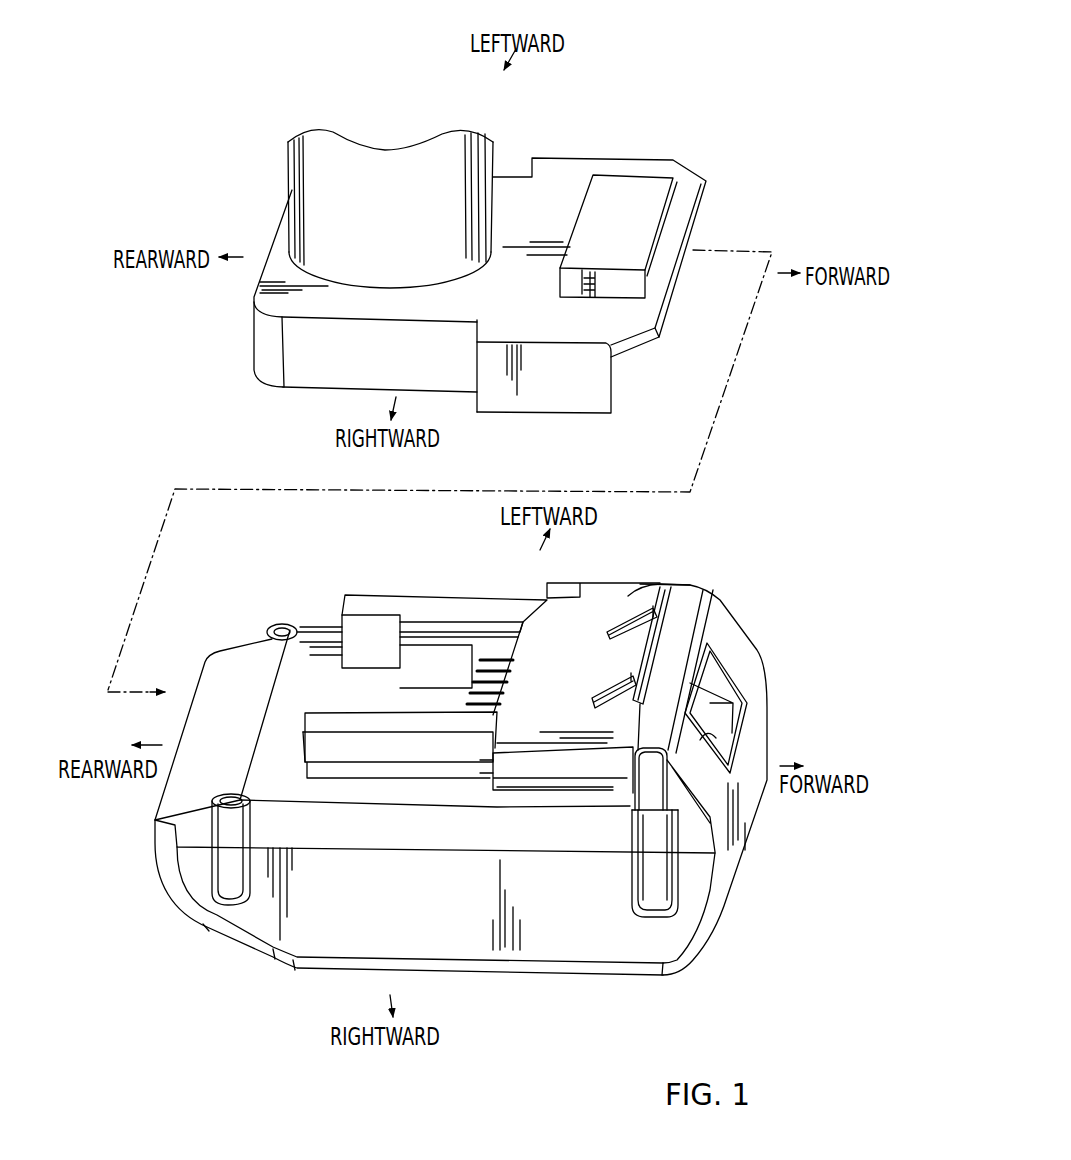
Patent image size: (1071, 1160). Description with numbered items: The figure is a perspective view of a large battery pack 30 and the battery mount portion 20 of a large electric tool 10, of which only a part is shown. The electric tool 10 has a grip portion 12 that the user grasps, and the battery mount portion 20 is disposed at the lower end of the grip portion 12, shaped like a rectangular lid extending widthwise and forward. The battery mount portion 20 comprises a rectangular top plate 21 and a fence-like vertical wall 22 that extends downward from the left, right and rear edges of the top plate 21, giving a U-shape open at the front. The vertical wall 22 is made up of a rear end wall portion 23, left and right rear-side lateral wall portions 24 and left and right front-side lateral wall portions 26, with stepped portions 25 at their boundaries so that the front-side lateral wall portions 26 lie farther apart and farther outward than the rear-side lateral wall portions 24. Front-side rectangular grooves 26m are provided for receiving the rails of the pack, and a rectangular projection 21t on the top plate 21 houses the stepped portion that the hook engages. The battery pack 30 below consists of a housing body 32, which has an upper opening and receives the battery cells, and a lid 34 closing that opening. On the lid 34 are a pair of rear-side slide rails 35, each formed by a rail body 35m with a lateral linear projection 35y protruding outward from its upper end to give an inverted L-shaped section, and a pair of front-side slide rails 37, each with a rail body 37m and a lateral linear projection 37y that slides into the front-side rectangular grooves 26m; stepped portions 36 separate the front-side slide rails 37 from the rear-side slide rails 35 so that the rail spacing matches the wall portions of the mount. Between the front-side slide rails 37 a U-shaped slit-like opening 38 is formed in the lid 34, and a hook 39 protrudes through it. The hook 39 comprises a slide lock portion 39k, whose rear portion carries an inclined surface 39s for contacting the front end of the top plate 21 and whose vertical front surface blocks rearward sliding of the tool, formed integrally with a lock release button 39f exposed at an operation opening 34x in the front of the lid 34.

The electric tool 10 is at (423, 68).
The grip portion 12 is at (372, 185).
The battery mount portion 20 is at (618, 162).
The top plate 21 is at (550, 228).
The rectangular projection 21t is at (622, 223).
The vertical wall 22 is at (256, 386).
The rear end wall portion 23 is at (254, 334).
The rear-side lateral wall portions 24 is at (505, 192).
The stepped portions 25 is at (532, 158).
The front-side lateral wall portions 26 is at (655, 158).
The front-side rectangular grooves 26m is at (617, 367).
The battery pack 30 is at (755, 603).
The housing body 32 is at (569, 885).
The lid 34 is at (311, 684).
The operation opening 34x is at (735, 777).
The rear-side slide rails 35 is at (422, 598).
The lateral linear projection 35y is at (467, 607).
The rail body 35m is at (403, 773).
The stepped portions 36 is at (545, 598).
The front-side slide rails 37 is at (615, 573).
The lateral linear projection 37y is at (570, 617).
The rail body 37m is at (552, 789).
The slit-like opening 38 is at (588, 708).
The hook 39 is at (660, 656).
The slide lock portion 39k is at (652, 653).
The inclined surface 39s is at (622, 597).
The lock release button 39f is at (705, 707).